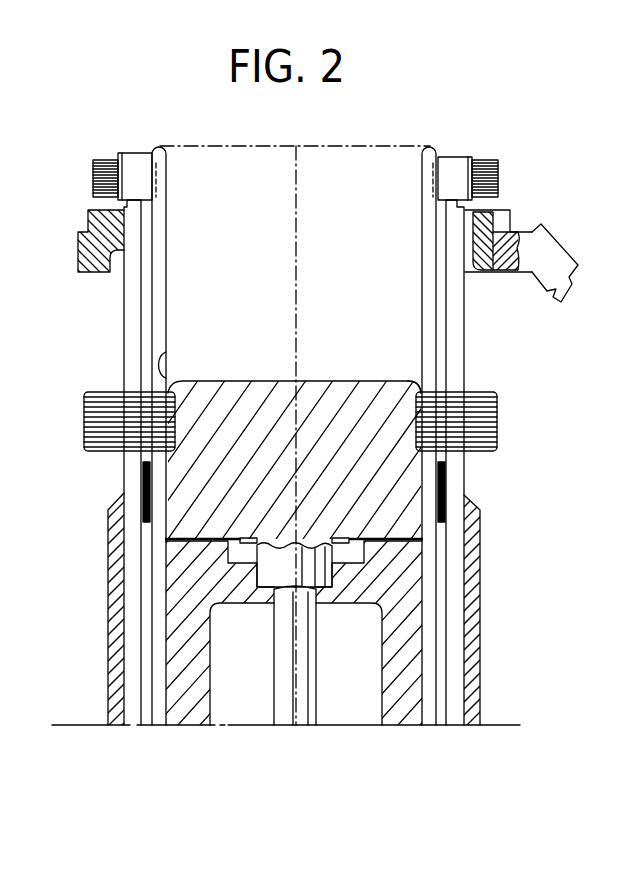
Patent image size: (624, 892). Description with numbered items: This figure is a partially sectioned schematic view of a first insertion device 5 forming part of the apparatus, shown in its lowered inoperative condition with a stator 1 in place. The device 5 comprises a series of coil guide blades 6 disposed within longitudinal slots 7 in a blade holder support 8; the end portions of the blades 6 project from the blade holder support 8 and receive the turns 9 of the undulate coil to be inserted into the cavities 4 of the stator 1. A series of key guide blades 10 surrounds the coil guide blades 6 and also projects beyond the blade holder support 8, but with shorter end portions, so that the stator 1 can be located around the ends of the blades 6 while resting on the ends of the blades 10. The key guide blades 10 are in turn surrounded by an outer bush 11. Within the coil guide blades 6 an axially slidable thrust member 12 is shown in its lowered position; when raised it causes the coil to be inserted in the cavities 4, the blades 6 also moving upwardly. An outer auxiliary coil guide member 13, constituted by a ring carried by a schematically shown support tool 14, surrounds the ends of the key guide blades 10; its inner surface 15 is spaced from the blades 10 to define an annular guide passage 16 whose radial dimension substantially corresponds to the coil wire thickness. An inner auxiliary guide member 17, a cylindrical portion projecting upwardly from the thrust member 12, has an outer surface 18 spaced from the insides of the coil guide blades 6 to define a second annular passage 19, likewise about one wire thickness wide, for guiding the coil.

The stator 1 is at (512, 172).
The cavities 4 is at (137, 164).
The first insertion device 5 is at (74, 382).
The coil guide blades 6 is at (161, 177).
The longitudinal slots 7 is at (166, 577).
The blade holder support 8 is at (190, 632).
The turns 9 is at (118, 388).
The key guide blades 10 is at (455, 343).
The outer bush 11 is at (474, 586).
The thrust member 12 is at (397, 473).
The outer auxiliary coil guide member 13 is at (514, 208).
The support tool 14 is at (553, 258).
The inner surface 15 is at (487, 240).
The annular guide passage 16 is at (122, 256).
The inner auxiliary guide member 17 is at (262, 397).
The outer surface 18 is at (165, 355).
The annular passage 19 is at (415, 387).